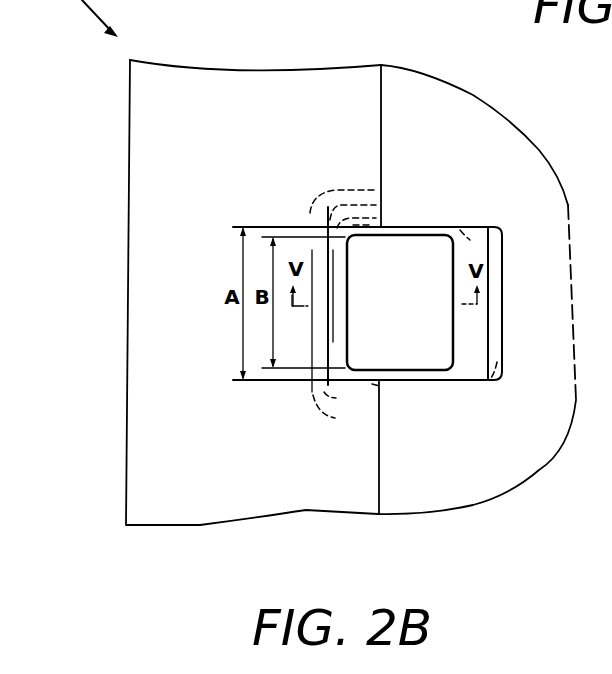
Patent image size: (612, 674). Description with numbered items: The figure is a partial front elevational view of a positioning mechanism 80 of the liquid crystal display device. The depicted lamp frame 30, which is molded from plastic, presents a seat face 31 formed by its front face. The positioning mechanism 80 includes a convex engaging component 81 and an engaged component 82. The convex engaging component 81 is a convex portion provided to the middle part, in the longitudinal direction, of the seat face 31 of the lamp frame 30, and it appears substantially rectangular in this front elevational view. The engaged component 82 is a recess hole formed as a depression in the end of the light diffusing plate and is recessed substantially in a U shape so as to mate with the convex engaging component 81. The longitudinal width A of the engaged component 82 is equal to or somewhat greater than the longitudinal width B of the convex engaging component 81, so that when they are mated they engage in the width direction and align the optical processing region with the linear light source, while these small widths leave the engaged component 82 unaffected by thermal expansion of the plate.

The lamp frame 30 is at (130, 266).
The seat face 31 is at (236, 84).
The positioning mechanism 80 is at (338, 166).
The convex engaging component 81 is at (418, 236).
The engaged component 82 is at (497, 304).